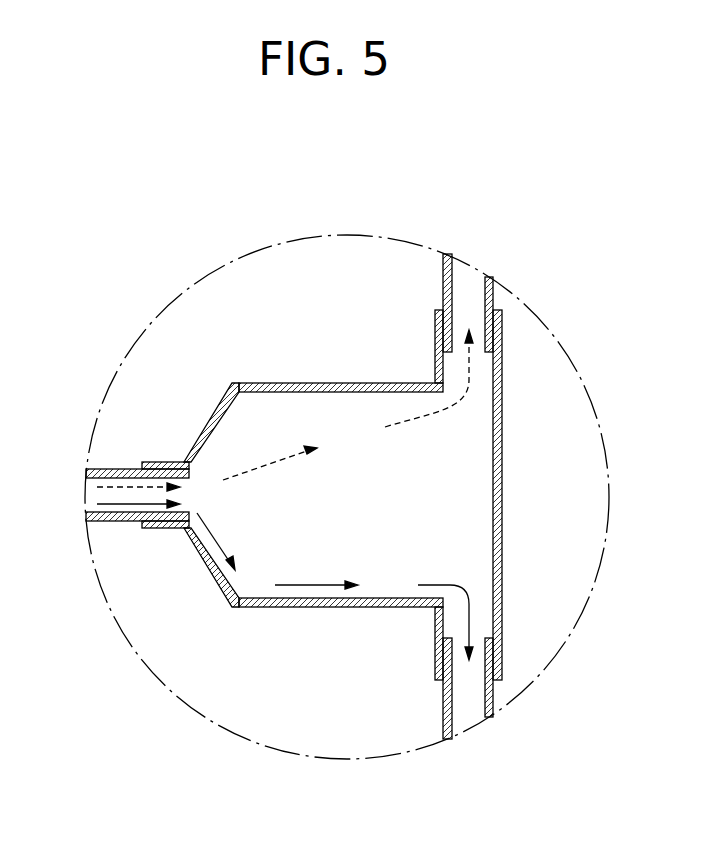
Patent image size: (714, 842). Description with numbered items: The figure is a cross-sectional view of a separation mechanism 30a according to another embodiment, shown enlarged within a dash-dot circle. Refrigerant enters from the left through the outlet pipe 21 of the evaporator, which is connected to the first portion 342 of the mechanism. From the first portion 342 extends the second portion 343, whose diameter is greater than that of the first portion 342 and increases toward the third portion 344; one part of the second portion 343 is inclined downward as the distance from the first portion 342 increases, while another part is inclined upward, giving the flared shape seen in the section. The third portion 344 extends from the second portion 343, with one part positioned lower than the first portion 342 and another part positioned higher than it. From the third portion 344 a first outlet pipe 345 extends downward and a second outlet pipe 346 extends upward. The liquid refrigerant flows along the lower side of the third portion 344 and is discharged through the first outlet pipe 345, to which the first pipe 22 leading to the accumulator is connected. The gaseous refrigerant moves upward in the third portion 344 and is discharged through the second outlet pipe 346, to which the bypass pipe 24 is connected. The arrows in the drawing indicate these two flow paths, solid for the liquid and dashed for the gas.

The separation mechanism 30a is at (383, 203).
The outlet pipe 21 is at (110, 519).
The first pipe 22 is at (492, 698).
The bypass pipe 24 is at (493, 288).
The first portion 342 is at (158, 528).
The second portion 343 is at (215, 573).
The third portion 344 is at (342, 600).
The first outlet pipe 345 is at (437, 647).
The second outlet pipe 346 is at (502, 358).